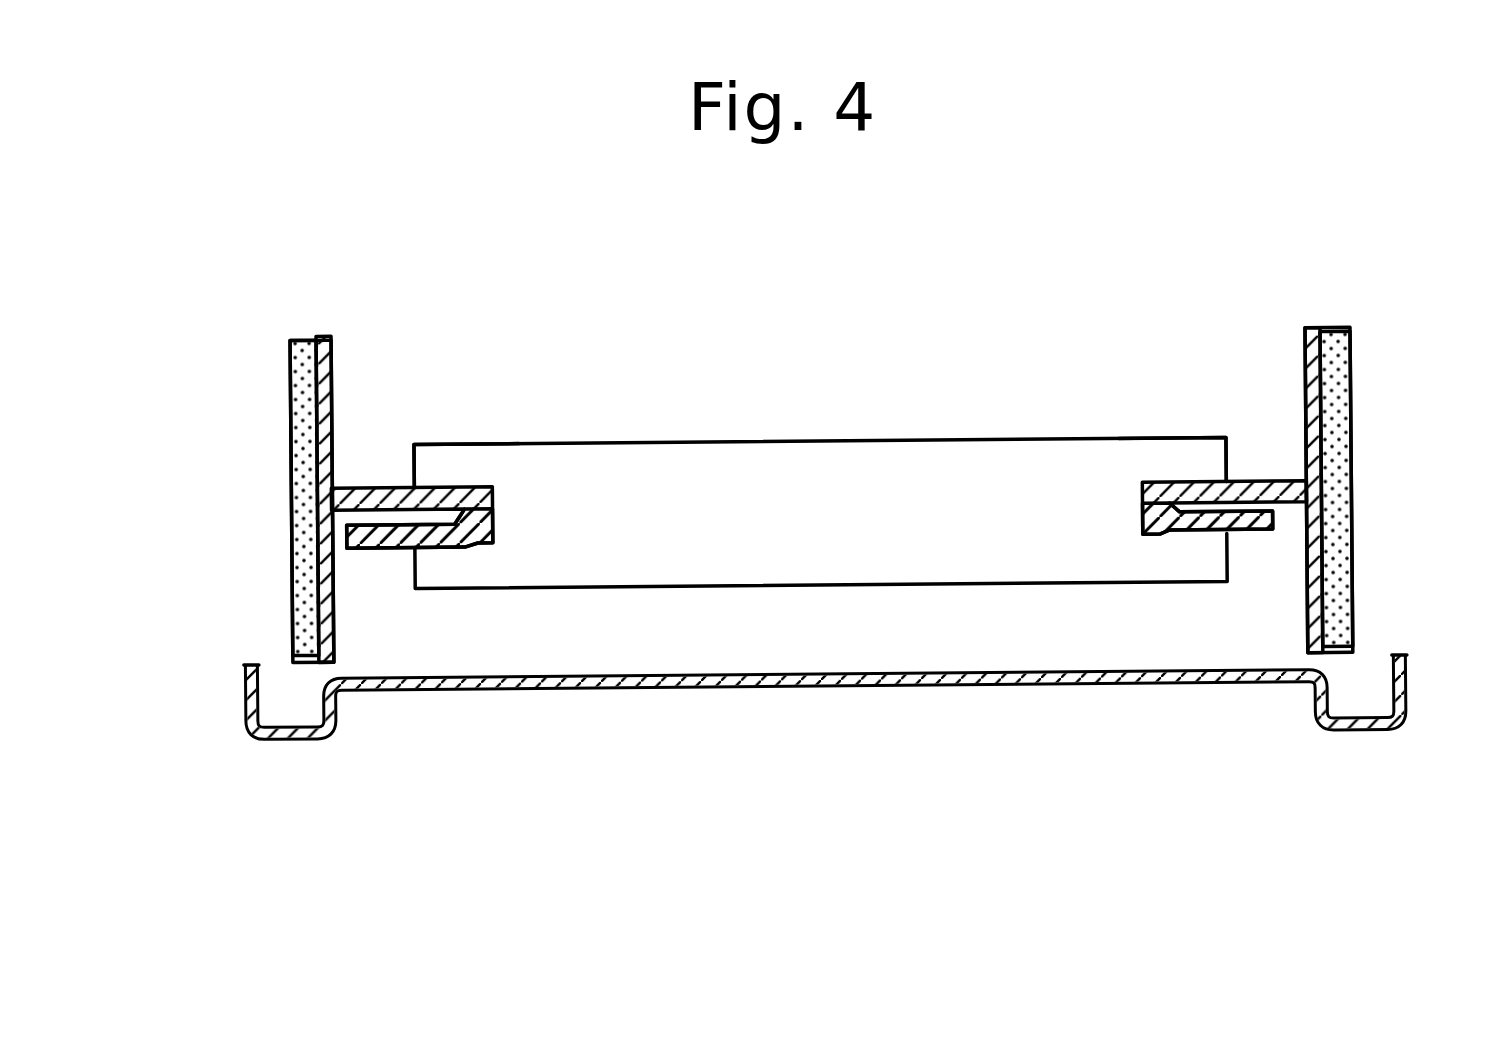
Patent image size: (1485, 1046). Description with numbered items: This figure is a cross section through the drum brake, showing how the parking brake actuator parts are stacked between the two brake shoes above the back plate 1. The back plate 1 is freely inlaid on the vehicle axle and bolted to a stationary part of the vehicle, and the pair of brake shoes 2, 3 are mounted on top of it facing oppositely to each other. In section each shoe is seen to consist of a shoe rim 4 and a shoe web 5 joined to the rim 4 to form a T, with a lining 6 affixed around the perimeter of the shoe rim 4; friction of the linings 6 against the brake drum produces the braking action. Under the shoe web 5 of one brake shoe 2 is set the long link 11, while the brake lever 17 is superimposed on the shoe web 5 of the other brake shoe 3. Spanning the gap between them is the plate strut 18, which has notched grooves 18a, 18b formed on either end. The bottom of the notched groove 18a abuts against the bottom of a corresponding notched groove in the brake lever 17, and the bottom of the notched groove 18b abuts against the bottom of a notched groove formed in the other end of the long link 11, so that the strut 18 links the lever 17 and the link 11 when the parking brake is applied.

The back plate 1 is at (848, 685).
The brake shoe 2 is at (1365, 499).
The brake shoe 3 is at (278, 516).
The shoe rim 4 is at (322, 332).
The shoe web 5 is at (360, 484).
The lining 6 is at (290, 367).
The long link 11 is at (1252, 534).
The brake lever 17 is at (386, 544).
The strut 18 is at (801, 441).
The notched groove 18a is at (473, 484).
The notched groove 18b is at (1160, 486).